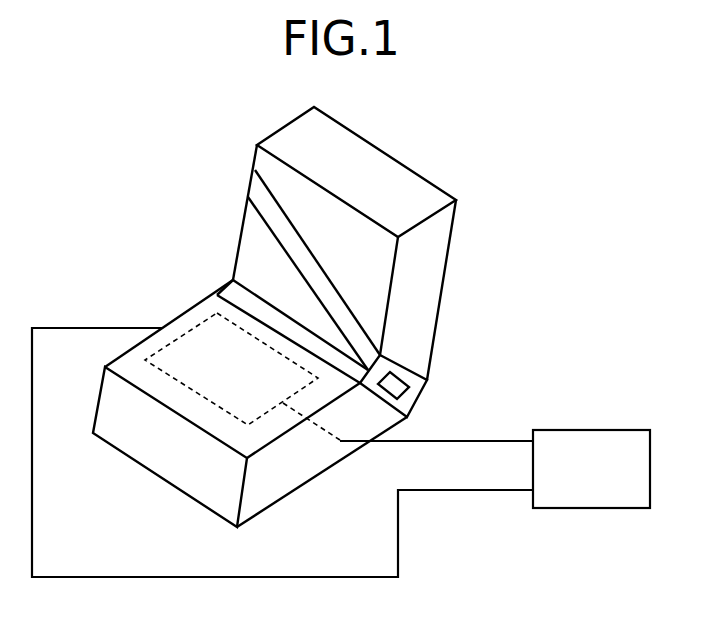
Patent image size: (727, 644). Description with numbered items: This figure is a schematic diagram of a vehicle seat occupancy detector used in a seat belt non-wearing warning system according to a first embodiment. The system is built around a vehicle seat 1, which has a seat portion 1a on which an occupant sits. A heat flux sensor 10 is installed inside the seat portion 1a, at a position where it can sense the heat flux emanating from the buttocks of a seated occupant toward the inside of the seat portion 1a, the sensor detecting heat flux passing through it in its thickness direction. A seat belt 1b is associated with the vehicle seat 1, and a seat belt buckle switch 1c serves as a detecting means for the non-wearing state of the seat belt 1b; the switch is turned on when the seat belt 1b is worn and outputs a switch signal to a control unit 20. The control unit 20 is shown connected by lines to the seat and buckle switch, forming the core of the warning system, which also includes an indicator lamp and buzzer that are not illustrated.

The vehicle seat 1 is at (277, 128).
The seat portion 1a is at (195, 302).
The seat belt 1b is at (352, 310).
The seat belt buckle switch 1c is at (427, 381).
The heat flux sensor 10 is at (190, 389).
The control unit 20 is at (605, 430).